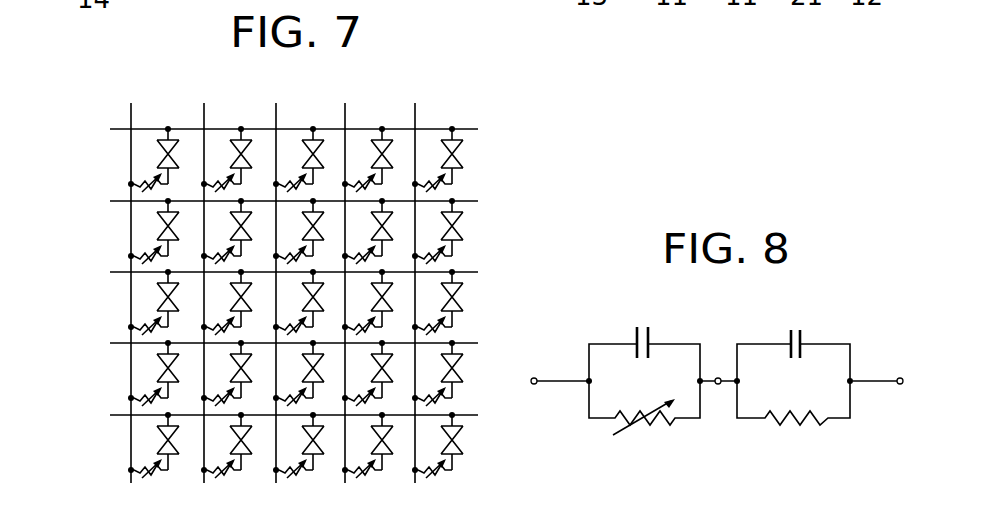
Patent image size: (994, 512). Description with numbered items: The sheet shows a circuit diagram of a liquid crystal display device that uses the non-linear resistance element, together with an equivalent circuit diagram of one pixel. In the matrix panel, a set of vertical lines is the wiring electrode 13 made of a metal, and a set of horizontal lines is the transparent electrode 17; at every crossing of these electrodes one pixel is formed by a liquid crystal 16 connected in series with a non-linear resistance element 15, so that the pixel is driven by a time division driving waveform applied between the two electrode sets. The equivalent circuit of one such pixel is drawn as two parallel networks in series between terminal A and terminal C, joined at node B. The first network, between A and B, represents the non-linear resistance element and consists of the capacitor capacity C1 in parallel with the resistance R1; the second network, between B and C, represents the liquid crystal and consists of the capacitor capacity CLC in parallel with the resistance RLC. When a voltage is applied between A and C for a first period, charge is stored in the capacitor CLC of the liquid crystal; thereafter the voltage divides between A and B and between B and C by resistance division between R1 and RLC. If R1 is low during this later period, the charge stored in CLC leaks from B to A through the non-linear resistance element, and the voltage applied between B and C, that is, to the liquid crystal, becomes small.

In FIG. 7, the wiring electrode 13 is at (488, 100).
In FIG. 7, the transparent electrode 17 is at (80, 115).
In FIG. 7, the liquid crystal 16 is at (462, 151).
In FIG. 7, the non-linear resistance element 15 is at (437, 193).
In FIG. 8, the terminal A is at (554, 365).
In FIG. 8, the node B is at (718, 376).
In FIG. 8, the terminal C is at (882, 364).
In FIG. 8, the capacitor capacity of non-linear resistance element C1 is at (644, 338).
In FIG. 8, the resistance of non-linear resistance element R1 is at (644, 423).
In FIG. 8, the capacitor capacity of liquid crystal CLC is at (793, 335).
In FIG. 8, the resistance of liquid crystal RLC is at (793, 423).